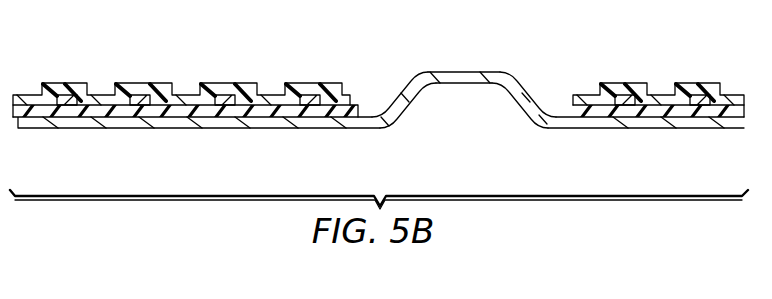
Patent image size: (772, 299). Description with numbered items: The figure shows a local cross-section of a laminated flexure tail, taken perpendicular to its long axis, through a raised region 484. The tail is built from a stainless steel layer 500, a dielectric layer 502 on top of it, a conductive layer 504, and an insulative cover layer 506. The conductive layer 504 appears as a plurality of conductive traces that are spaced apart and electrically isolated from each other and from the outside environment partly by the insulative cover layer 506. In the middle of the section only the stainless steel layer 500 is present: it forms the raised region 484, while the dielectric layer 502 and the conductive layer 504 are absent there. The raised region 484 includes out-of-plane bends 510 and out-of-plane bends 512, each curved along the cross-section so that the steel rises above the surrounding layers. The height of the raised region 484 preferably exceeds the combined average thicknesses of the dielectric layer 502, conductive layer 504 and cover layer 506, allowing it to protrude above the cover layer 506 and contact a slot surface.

The raised region 484 is at (462, 70).
The stainless steel layer 500 is at (78, 122).
The dielectric layer 502 is at (212, 110).
The conductive layer 504 is at (140, 100).
The insulative cover layer 506 is at (58, 90).
The out-of-plane bends 510 is at (415, 75).
The out-of-plane bends 512 is at (524, 74).